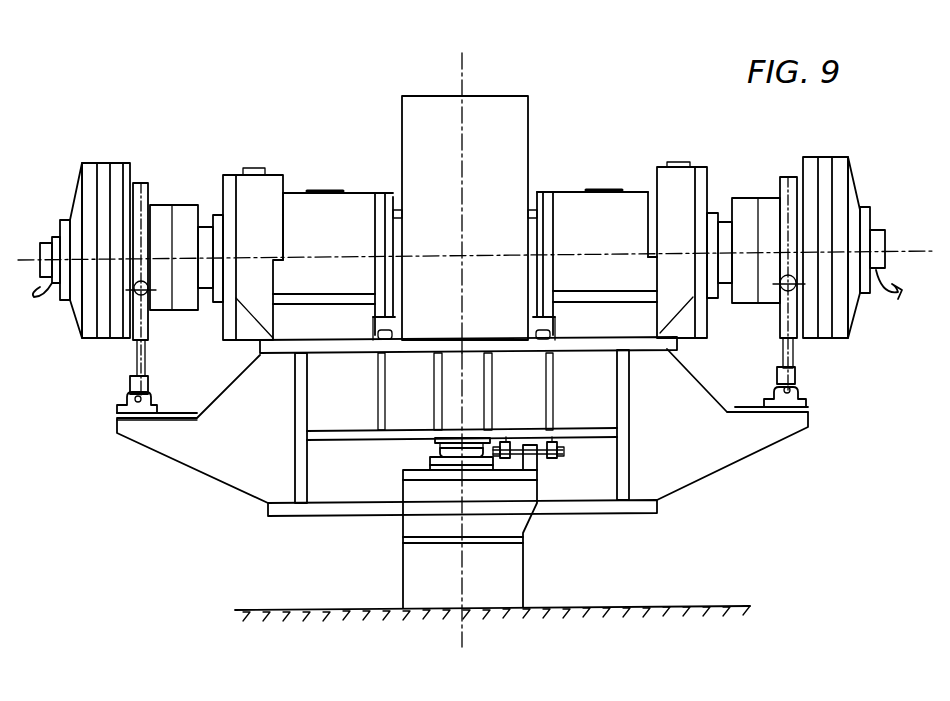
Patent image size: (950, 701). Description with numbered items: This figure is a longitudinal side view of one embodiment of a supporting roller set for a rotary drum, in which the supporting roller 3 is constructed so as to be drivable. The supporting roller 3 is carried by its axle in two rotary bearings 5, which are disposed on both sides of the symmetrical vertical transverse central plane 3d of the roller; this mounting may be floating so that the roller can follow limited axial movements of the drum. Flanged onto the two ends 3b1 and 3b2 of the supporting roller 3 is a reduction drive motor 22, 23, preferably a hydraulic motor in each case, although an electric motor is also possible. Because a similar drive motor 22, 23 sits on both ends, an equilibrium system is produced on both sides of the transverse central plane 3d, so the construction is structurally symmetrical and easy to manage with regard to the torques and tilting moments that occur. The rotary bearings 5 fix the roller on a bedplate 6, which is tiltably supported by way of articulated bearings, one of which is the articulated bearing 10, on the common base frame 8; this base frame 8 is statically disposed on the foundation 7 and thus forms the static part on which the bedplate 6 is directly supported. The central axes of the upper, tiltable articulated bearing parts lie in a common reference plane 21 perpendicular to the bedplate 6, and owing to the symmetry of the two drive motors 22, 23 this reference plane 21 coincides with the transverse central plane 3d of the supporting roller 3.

The supporting roller 3 is at (494, 105).
The symmetrical vertical transverse central plane 3d is at (462, 80).
The first end of the supporting roller axle 3b1 is at (204, 225).
The second end of the supporting roller axle 3b2 is at (725, 225).
The rotary bearing 5 is at (330, 210).
The bedplate 6 is at (652, 448).
The foundation 7 is at (674, 613).
The common base frame 8 is at (530, 558).
The articulated bearing 10 is at (420, 453).
The reference plane 21 is at (458, 418).
The reduction drive motor 22 is at (90, 173).
The reduction drive motor 23 is at (812, 165).